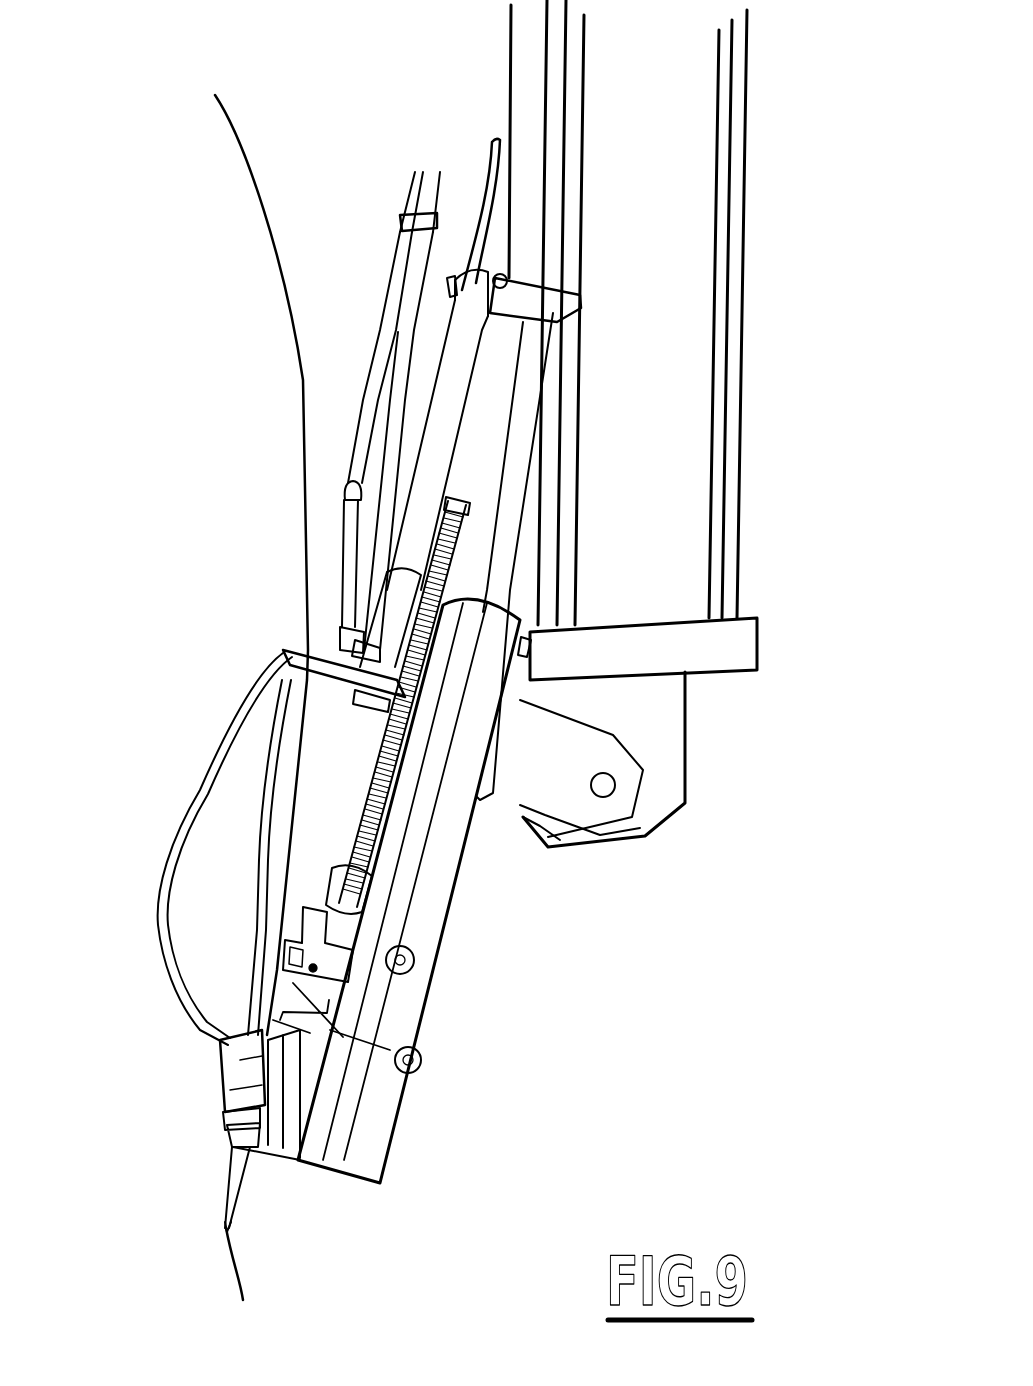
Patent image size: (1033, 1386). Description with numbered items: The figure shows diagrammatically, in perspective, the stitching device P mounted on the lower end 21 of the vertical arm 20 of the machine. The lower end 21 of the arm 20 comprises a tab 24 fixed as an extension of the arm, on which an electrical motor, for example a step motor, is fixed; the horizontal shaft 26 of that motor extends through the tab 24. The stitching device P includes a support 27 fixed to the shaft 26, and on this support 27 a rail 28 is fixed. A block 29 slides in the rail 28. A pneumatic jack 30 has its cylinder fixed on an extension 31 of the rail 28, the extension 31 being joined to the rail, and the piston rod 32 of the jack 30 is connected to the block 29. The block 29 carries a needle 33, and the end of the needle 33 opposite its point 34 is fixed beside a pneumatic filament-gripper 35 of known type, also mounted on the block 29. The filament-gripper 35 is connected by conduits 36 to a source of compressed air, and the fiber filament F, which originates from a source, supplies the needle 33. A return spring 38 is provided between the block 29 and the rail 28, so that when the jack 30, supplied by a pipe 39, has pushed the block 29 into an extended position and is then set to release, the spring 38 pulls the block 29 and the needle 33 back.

The arm 20 is at (712, 125).
The lower end 21 is at (737, 640).
The tab 24 is at (667, 768).
The horizontal shaft 26 is at (609, 795).
The support 27 is at (560, 800).
The rail 28 is at (423, 935).
The block 29 is at (300, 1088).
The pneumatic jack 30 is at (447, 402).
The extension 31 is at (497, 470).
The piston rod 32 is at (357, 740).
The needle 33 is at (230, 1173).
The point 34 is at (222, 1222).
The pneumatic filament-gripper 35 is at (218, 1082).
The conduits 36 is at (260, 853).
The return spring 38 is at (373, 850).
The pipe 39 is at (413, 262).
The fiber filament F is at (258, 204).
The stitching device P is at (145, 532).